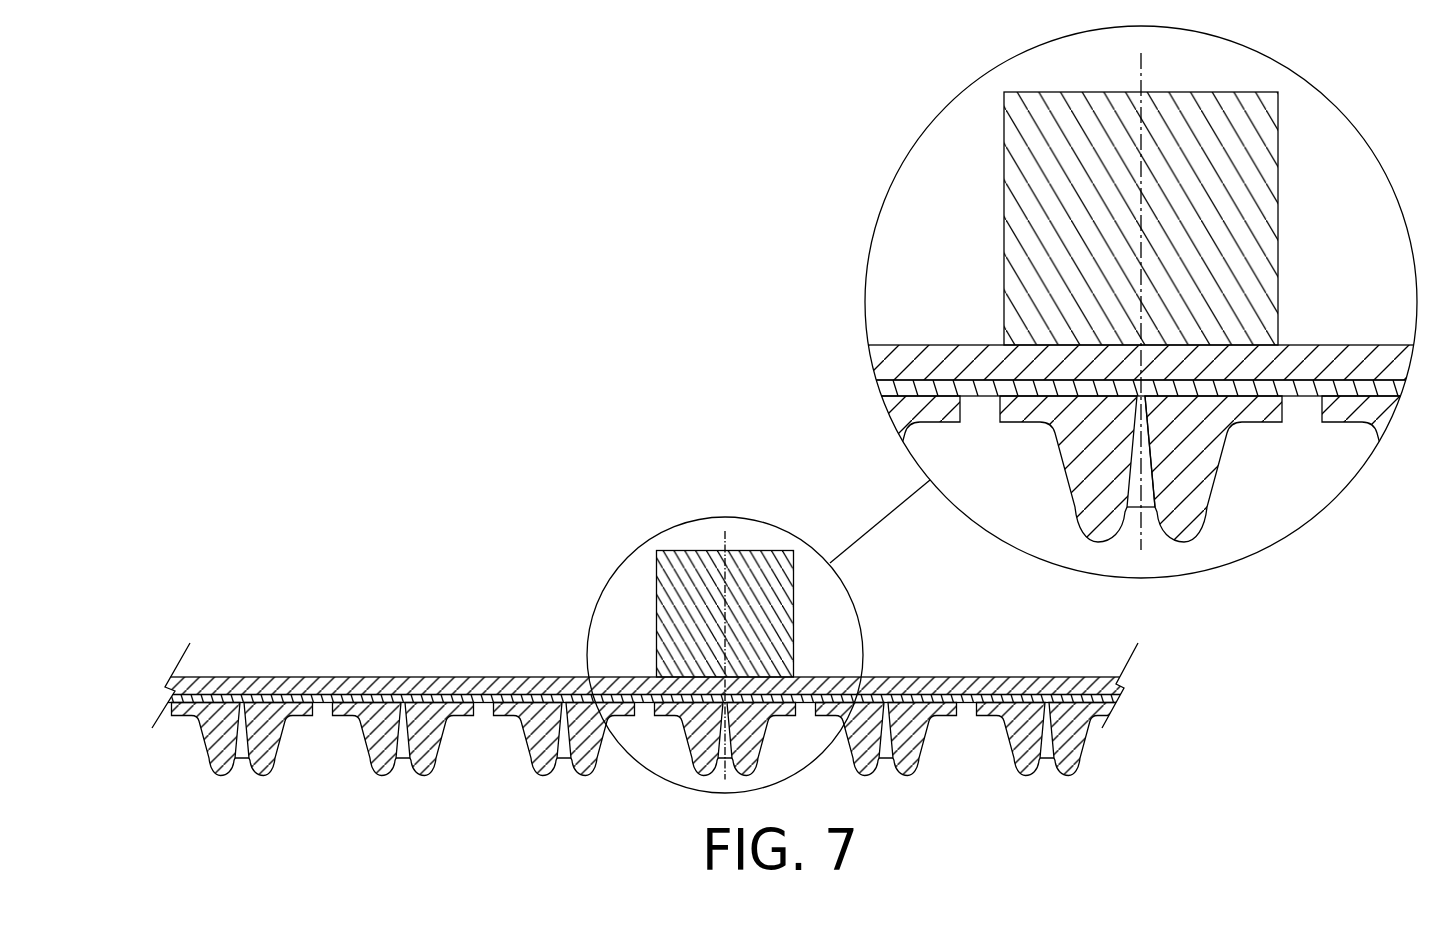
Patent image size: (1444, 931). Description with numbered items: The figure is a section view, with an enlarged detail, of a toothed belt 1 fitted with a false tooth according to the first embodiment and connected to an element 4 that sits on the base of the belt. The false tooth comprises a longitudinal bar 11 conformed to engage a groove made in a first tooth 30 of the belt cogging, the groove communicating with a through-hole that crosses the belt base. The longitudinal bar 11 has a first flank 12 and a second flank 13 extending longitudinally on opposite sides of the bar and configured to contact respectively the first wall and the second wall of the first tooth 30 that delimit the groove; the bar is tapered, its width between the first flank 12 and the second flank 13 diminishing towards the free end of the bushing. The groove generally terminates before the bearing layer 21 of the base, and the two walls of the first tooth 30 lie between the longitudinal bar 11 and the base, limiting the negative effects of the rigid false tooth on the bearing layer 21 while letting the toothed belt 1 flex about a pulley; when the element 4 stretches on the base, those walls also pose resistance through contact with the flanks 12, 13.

The toothed belt 1 is at (1107, 767).
The element 4 is at (1015, 138).
The longitudinal bar 11 is at (1144, 398).
The first flank 12 is at (1155, 463).
The second flank 13 is at (1138, 400).
The bearing layer 21 is at (897, 393).
The first tooth 30 is at (1197, 445).